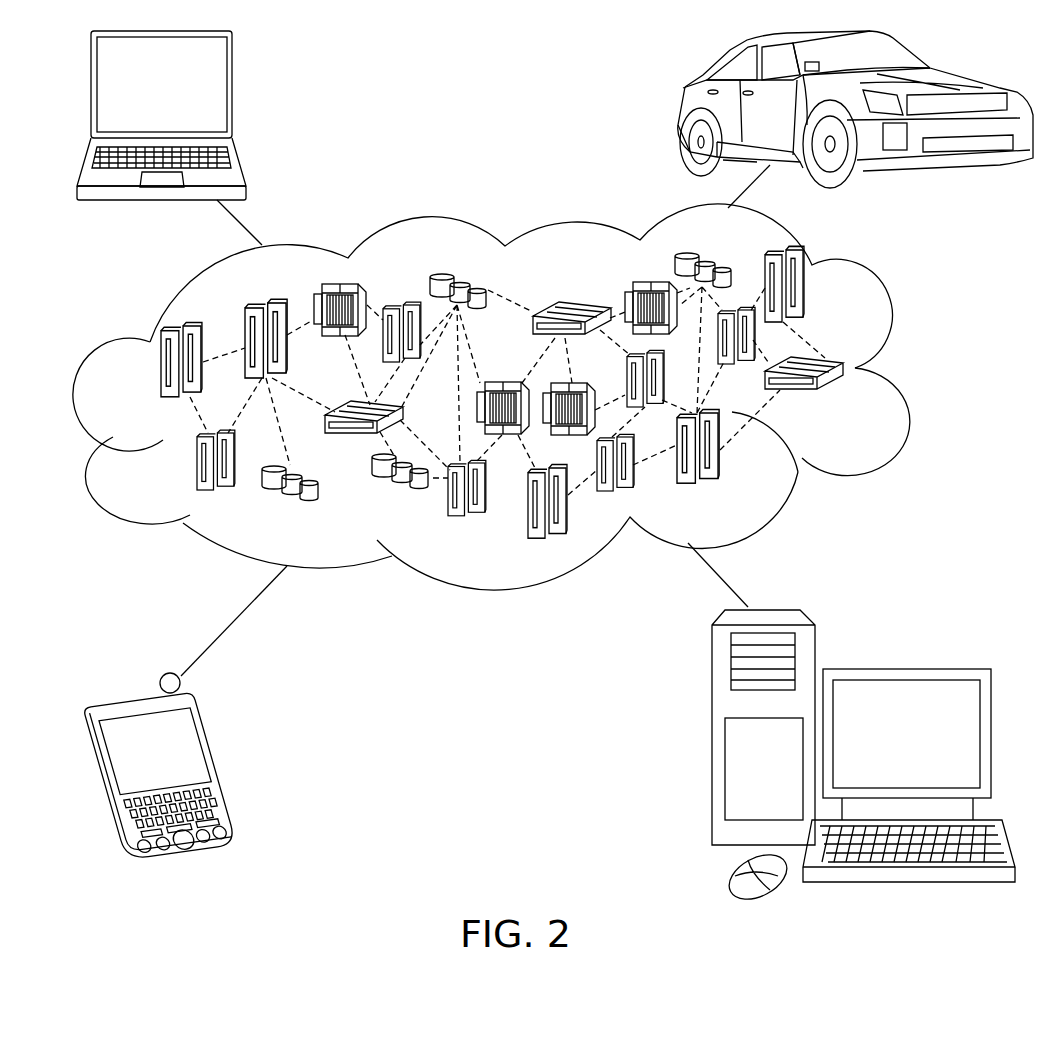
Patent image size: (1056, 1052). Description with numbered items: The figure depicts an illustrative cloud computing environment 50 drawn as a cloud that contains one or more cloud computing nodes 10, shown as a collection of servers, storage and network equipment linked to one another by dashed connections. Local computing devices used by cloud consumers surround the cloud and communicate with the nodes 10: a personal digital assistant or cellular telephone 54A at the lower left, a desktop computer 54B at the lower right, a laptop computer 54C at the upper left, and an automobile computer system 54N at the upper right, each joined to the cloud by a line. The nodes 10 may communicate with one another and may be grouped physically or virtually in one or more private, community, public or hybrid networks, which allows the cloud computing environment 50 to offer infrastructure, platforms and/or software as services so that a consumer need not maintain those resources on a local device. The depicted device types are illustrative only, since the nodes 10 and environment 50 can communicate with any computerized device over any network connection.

The cloud computing node 10 is at (847, 405).
The cloud computing environment 50 is at (900, 378).
The personal digital assistant (PDA) or cellular telephone 54A is at (222, 767).
The desktop computer 54B is at (904, 669).
The laptop computer 54C is at (232, 92).
The automobile computer system 54N is at (682, 108).